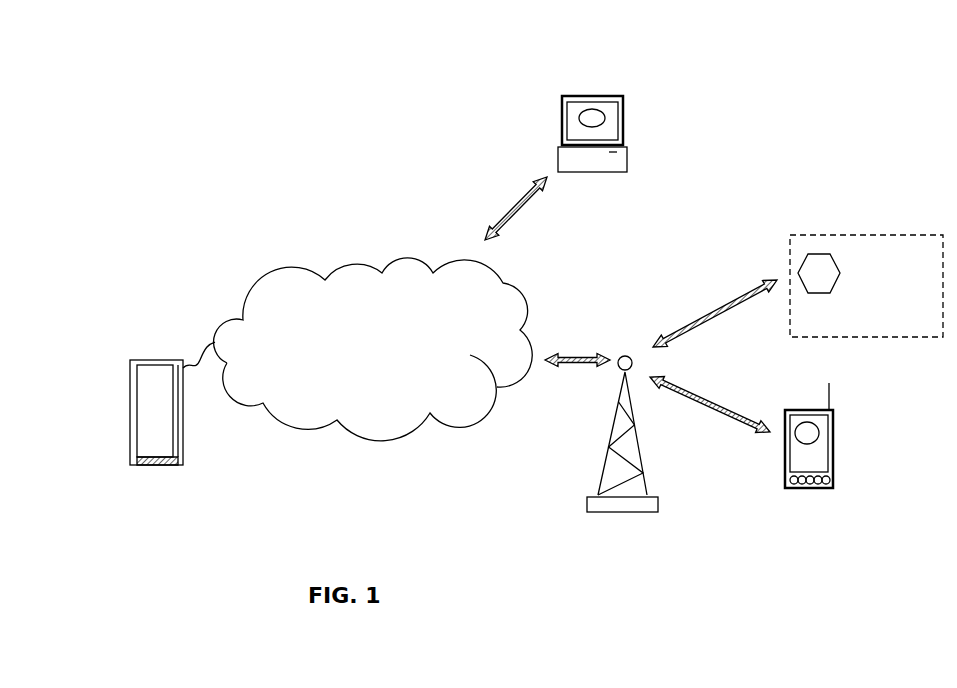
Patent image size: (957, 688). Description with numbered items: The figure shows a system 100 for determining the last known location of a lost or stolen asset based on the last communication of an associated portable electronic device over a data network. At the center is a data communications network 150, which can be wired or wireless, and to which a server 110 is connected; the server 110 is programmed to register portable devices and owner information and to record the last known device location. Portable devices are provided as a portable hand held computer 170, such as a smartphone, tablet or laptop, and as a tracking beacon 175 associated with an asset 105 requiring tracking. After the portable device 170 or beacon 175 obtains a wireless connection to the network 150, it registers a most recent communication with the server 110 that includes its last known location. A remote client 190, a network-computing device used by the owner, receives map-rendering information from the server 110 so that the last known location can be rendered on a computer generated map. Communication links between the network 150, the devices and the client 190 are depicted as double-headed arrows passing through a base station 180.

The system 100 is at (272, 101).
The server 110 is at (130, 360).
The data communications network 150 is at (373, 349).
The remote client 190 is at (623, 105).
The asset 105 is at (866, 286).
The tracking beacon 175 is at (817, 262).
The portable hand held computer 170 is at (835, 432).
The base station 180 is at (658, 505).